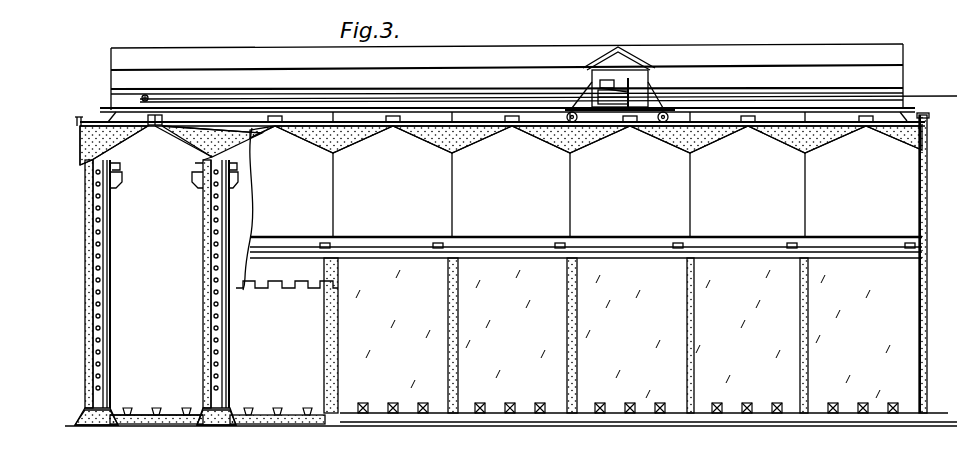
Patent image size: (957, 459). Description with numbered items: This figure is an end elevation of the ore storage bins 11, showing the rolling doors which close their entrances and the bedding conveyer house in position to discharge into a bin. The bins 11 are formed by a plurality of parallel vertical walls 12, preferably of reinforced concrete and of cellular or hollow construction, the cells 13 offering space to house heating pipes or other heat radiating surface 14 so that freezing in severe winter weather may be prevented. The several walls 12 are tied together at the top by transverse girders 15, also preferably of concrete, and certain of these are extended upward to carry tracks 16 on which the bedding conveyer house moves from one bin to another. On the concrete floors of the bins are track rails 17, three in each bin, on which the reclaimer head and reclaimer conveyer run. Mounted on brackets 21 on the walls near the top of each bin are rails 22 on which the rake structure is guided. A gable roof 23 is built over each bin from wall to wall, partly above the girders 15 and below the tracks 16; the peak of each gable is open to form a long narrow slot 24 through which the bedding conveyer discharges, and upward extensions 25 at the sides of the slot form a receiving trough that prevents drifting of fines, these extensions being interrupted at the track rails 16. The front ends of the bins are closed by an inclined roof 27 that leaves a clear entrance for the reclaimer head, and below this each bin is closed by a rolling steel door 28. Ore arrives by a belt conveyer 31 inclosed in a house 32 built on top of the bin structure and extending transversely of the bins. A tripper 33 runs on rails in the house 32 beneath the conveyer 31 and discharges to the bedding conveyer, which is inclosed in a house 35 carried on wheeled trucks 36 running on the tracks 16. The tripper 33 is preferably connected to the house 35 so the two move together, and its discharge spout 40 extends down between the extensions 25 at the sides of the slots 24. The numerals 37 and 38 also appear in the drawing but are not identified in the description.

The bin 11 is at (217, 330).
The vertical wall 12 is at (203, 310).
The cell 13 is at (100, 360).
The heat radiating surface 14 is at (100, 268).
The transverse girder 15 is at (157, 135).
The track 16 is at (100, 118).
The track rail 17 is at (186, 407).
The bracket 21 is at (116, 182).
The rail 22 is at (114, 164).
The gable roof 23 is at (200, 147).
The slot 24 is at (162, 118).
The upward extension 25 is at (147, 118).
The inclined roof 27 is at (586, 186).
The rolling steel door 28 is at (636, 335).
The conveyer 31 is at (922, 96).
The house 32 is at (522, 48).
The tripper 33 is at (608, 80).
The house 35 is at (628, 52).
The wheeled truck 36 is at (573, 113).
The hopper chute 37 is at (632, 92).
The floor 38 is at (113, 441).
The discharge spout 40 is at (622, 78).